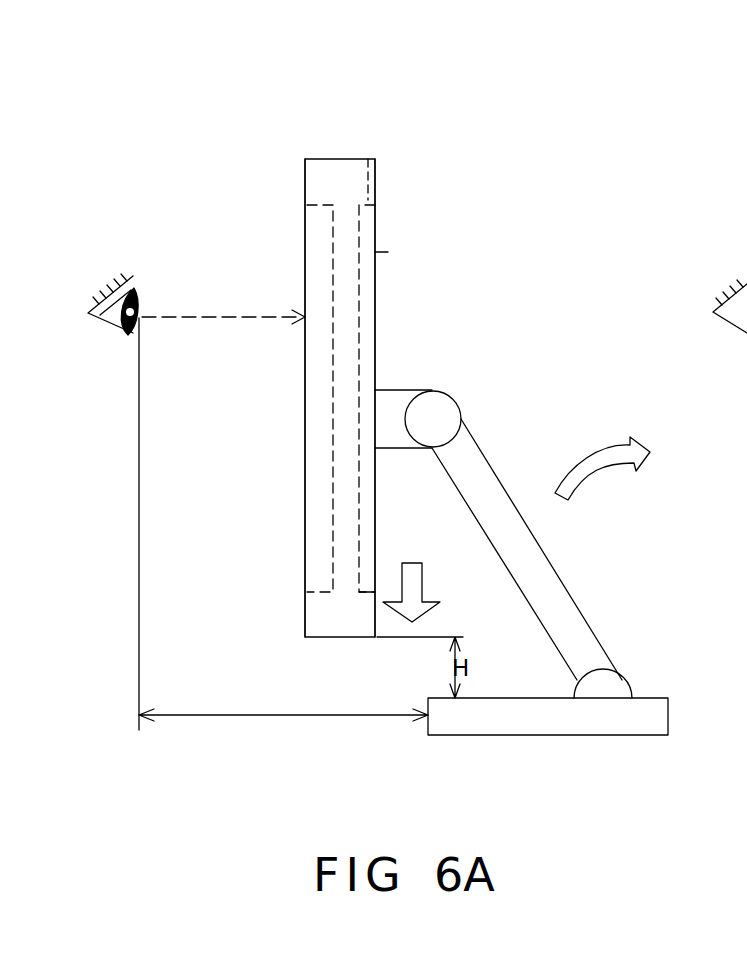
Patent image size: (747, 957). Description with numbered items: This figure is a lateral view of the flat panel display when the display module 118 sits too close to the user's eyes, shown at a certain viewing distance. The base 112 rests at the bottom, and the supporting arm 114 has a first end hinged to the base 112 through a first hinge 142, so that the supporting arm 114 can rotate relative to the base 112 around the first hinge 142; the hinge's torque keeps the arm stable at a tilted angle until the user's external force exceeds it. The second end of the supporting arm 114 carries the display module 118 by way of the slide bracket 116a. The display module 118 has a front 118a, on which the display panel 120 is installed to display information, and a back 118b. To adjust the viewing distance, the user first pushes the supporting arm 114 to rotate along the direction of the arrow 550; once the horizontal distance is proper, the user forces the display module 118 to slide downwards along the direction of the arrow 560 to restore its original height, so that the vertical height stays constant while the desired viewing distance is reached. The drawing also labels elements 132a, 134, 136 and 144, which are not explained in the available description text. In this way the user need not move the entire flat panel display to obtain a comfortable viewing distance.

The base 112 is at (514, 725).
The supporting arm 114 is at (580, 638).
The slide-bracket 116a is at (393, 402).
The display module 118 is at (305, 159).
The front 118a is at (305, 180).
The back 118b is at (375, 185).
The display panel 120 is at (313, 266).
The light source 132a is at (360, 251).
The light guide 134 is at (368, 200).
The reflector 136 is at (365, 593).
The first hinge 142 is at (610, 687).
The upper pivot 144 is at (440, 413).
The arrow 550 is at (640, 442).
The arrow 560 is at (408, 580).